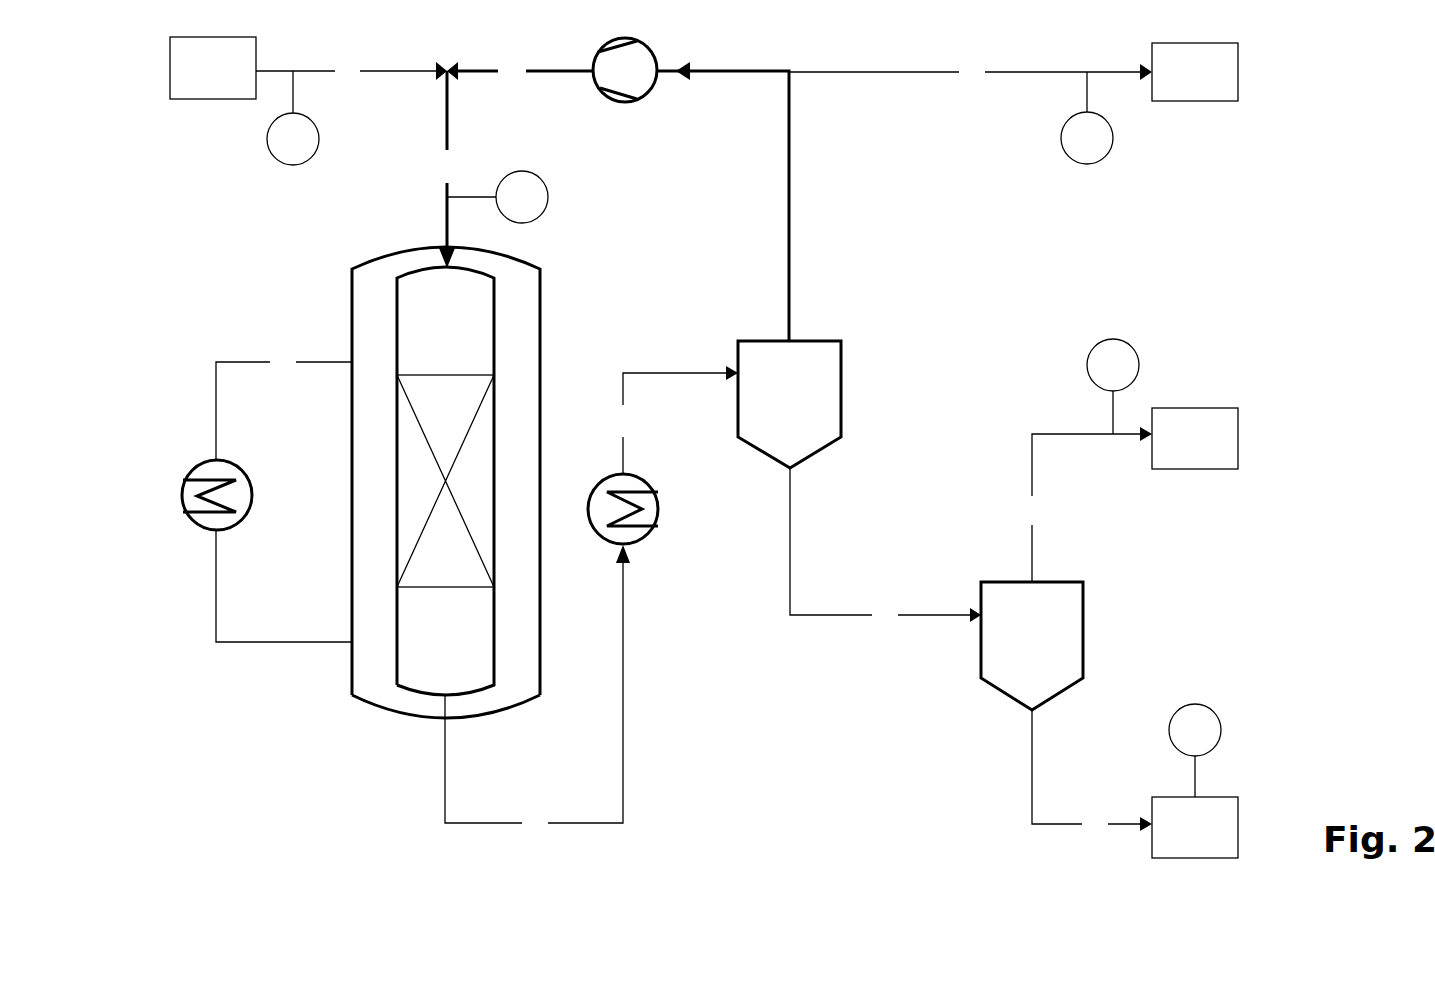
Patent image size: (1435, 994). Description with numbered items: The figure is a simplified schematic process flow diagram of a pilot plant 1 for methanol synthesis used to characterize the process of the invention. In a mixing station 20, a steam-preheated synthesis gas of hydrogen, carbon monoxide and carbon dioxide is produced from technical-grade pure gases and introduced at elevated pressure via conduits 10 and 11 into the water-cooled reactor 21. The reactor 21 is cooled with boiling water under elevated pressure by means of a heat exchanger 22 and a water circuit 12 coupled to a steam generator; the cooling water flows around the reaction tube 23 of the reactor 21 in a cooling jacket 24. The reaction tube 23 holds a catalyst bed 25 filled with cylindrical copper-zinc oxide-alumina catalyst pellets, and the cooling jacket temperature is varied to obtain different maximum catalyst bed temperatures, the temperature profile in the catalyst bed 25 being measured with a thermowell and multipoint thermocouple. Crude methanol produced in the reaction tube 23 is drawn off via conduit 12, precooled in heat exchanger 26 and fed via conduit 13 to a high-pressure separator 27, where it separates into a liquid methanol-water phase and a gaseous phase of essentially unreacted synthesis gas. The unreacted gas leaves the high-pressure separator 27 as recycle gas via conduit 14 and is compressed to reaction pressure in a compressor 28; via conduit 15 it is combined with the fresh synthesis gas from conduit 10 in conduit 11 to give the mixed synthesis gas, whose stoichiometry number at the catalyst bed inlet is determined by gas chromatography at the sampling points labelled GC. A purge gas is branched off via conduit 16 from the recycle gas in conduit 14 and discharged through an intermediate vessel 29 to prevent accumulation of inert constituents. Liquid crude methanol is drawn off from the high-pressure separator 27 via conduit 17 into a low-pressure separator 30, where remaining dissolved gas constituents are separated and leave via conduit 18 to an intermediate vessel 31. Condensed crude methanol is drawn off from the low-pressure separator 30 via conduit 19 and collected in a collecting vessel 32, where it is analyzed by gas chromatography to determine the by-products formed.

The pilot plant 1 is at (152, 868).
The conduit 10 is at (346, 112).
The conduit 11 is at (490, 169).
The conduit 12 is at (423, 593).
The conduit 13 is at (673, 420).
The conduit 14 is at (730, 201).
The conduit 15 is at (525, 71).
The conduit 16 is at (970, 112).
The conduit 17 is at (885, 548).
The conduit 18 is at (1085, 460).
The conduit 19 is at (1126, 770).
The mixing station 20 is at (213, 68).
The water-cooled reactor 21 is at (350, 307).
The heat exchanger 22 is at (182, 497).
The reaction tube 23 is at (395, 668).
The cooling jacket 24 is at (522, 313).
The catalyst bed 25 is at (483, 433).
The heat exchanger 26 is at (658, 512).
The high-pressure separator 27 is at (841, 378).
The compressor 28 is at (625, 102).
The intermediate vessel 29 is at (1195, 72).
The low-pressure separator 30 is at (1083, 618).
The intermediate vessel 31 is at (1195, 438).
The collecting vessel 32 is at (1195, 827).